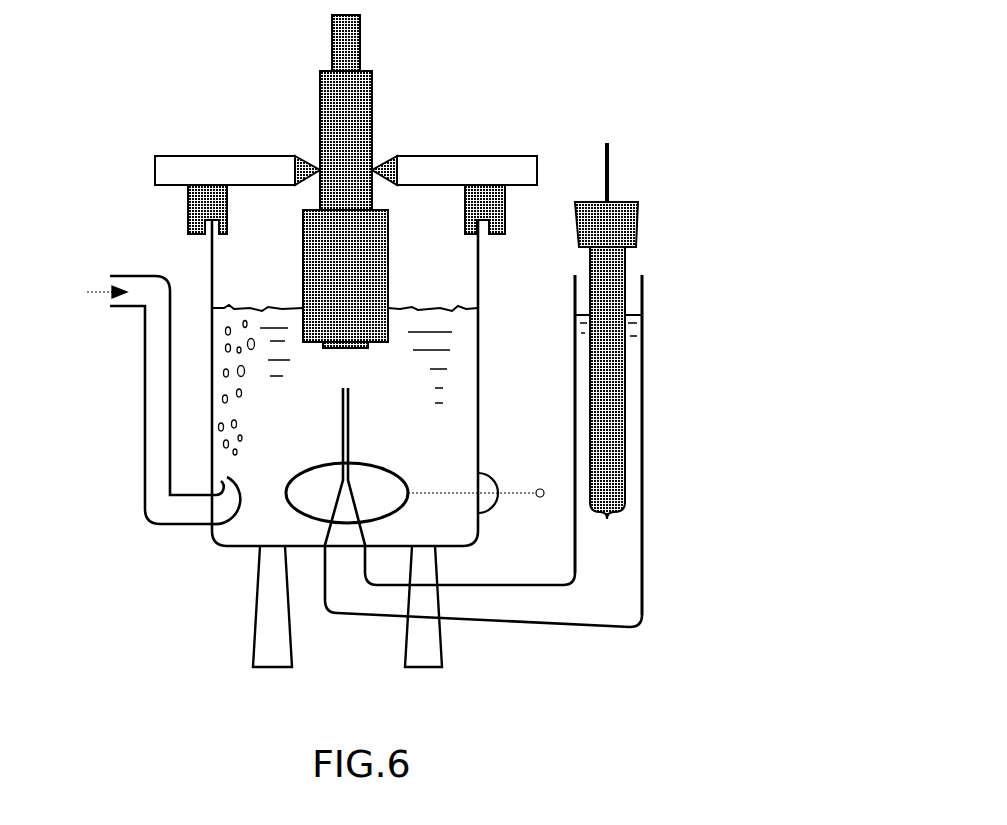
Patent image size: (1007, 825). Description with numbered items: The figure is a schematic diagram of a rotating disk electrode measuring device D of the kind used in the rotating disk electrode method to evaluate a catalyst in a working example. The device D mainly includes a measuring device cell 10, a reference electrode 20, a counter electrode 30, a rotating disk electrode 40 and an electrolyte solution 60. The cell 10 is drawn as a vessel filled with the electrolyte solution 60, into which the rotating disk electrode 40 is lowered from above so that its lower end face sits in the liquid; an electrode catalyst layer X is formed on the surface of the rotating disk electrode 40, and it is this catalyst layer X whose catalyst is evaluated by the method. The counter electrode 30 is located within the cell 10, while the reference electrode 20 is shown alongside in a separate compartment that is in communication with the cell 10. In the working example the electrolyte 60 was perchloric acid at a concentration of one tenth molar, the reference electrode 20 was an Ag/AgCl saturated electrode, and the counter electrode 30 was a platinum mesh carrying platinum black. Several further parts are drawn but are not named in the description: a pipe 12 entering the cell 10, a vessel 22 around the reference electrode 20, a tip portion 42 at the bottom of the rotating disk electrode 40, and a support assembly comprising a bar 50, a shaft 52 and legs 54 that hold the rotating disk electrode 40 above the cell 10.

The rotating disk electrode measuring device D is at (703, 115).
The measuring device cell 10 is at (478, 333).
The gas supply pipe 12 is at (227, 475).
The reference electrode 20 is at (622, 355).
The electrode vessel 22 is at (645, 418).
The counter electrode 30 is at (392, 470).
The rotating disk electrode 40 is at (388, 233).
The working electrode 42 is at (343, 265).
The support bar 50 is at (490, 165).
The support shaft 52 is at (372, 82).
The support legs 54 is at (382, 157).
The electrolyte solution 60 is at (300, 433).
The electrode catalyst layer X is at (312, 350).